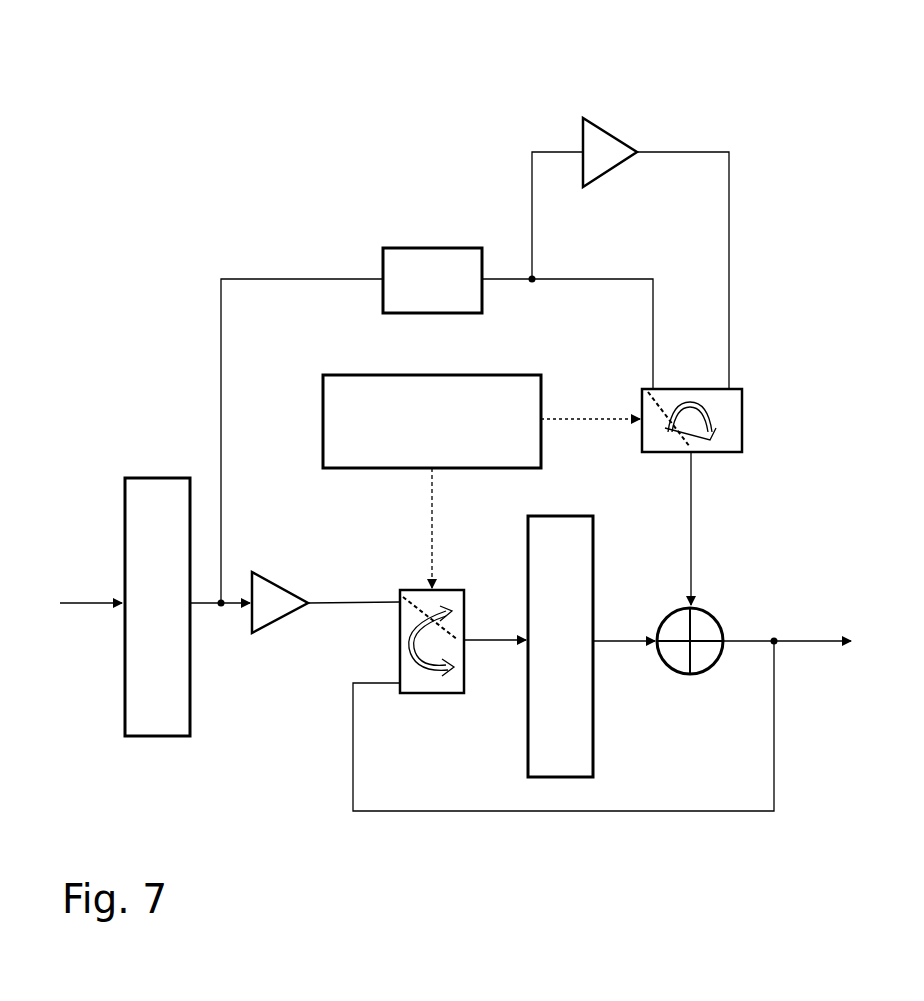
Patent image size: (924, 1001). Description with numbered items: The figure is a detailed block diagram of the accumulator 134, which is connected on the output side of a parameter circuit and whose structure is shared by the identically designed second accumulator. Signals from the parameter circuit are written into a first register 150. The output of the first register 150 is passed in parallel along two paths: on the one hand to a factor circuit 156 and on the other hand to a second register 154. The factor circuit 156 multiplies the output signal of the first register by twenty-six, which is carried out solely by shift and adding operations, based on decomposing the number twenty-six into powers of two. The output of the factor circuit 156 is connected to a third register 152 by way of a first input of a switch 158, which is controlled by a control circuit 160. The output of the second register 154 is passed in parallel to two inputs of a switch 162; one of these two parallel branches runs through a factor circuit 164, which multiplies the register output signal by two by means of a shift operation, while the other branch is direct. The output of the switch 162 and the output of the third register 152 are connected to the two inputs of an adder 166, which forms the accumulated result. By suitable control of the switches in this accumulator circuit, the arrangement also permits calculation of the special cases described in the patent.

The accumulator 134 is at (777, 67).
The first register 150 is at (158, 478).
The third register 152 is at (580, 516).
The second register 154 is at (405, 248).
The factor circuit 156 is at (284, 625).
The switch 158 is at (446, 590).
The control circuit 160 is at (378, 470).
The switch 162 is at (745, 399).
The factor circuit 164 is at (608, 130).
The adder 166 is at (714, 615).